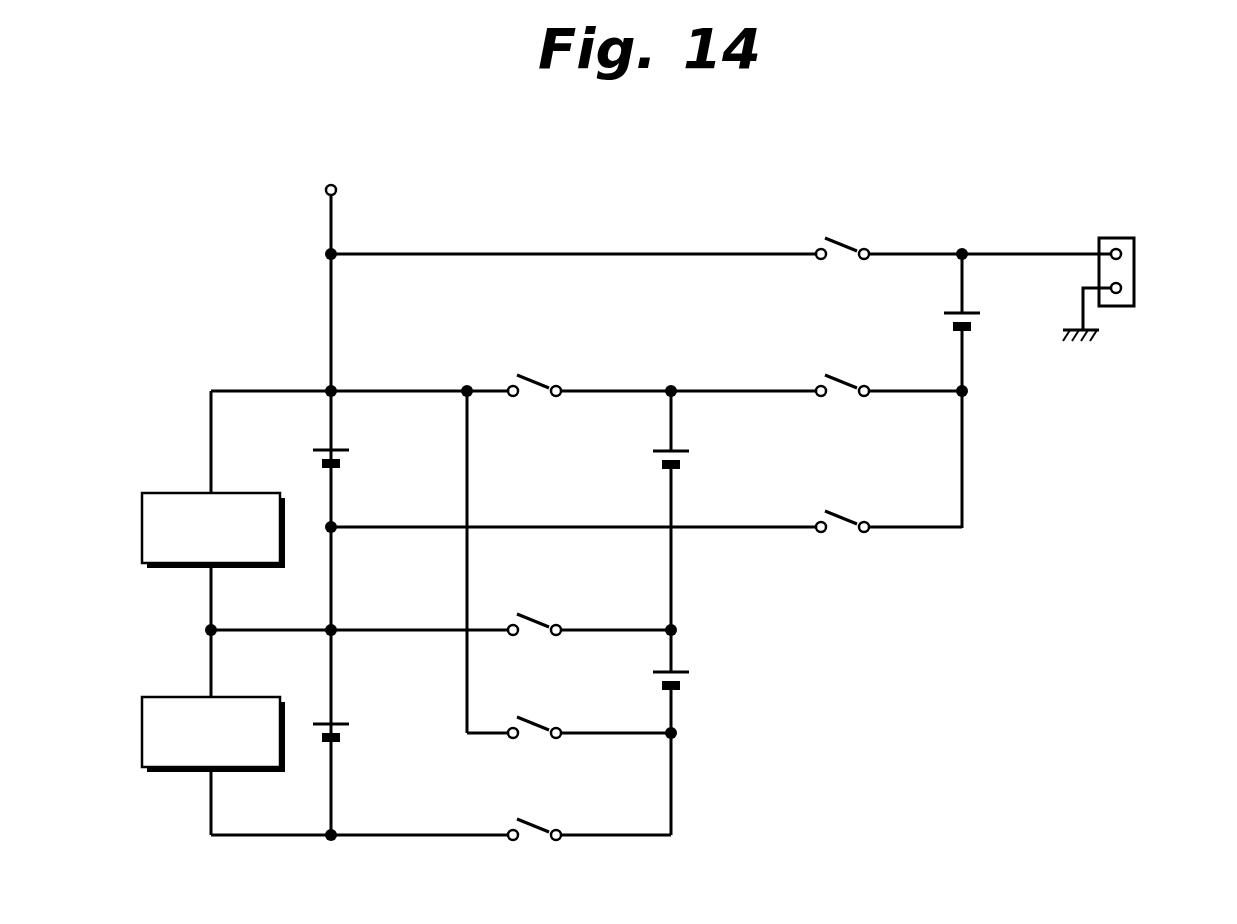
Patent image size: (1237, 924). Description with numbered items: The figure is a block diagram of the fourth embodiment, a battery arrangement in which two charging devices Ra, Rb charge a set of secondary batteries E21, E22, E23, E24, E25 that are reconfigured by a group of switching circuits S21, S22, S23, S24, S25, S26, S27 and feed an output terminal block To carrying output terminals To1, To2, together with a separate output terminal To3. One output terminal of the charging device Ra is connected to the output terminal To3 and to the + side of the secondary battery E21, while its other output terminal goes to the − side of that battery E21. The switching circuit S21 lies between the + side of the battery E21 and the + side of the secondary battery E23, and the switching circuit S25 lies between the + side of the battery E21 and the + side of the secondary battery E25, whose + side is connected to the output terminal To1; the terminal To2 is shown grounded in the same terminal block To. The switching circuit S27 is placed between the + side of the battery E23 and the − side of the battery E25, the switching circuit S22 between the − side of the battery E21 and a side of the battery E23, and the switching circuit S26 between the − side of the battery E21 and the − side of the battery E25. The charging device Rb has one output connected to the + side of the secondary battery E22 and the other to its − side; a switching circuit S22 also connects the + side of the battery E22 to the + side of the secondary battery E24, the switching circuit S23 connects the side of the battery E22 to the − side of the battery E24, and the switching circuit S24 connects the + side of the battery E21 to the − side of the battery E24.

The output terminal block To is at (1113, 237).
The output terminal To1 is at (1124, 252).
The output terminal To2 is at (1124, 286).
The output terminal To3 is at (331, 183).
The switching circuit S21 is at (531, 373).
The switching circuit S22 is at (531, 612).
The switching circuit S23 is at (538, 842).
The switching circuit S24 is at (538, 740).
The switching circuit S25 is at (838, 236).
The switching circuit S26 is at (843, 533).
The switching circuit S27 is at (839, 372).
The secondary battery E21 is at (350, 455).
The secondary battery E22 is at (350, 730).
The secondary battery E23 is at (690, 457).
The secondary battery E24 is at (690, 678).
The secondary battery E25 is at (980, 323).
The charging device Ra is at (140, 532).
The charging device Rb is at (140, 736).